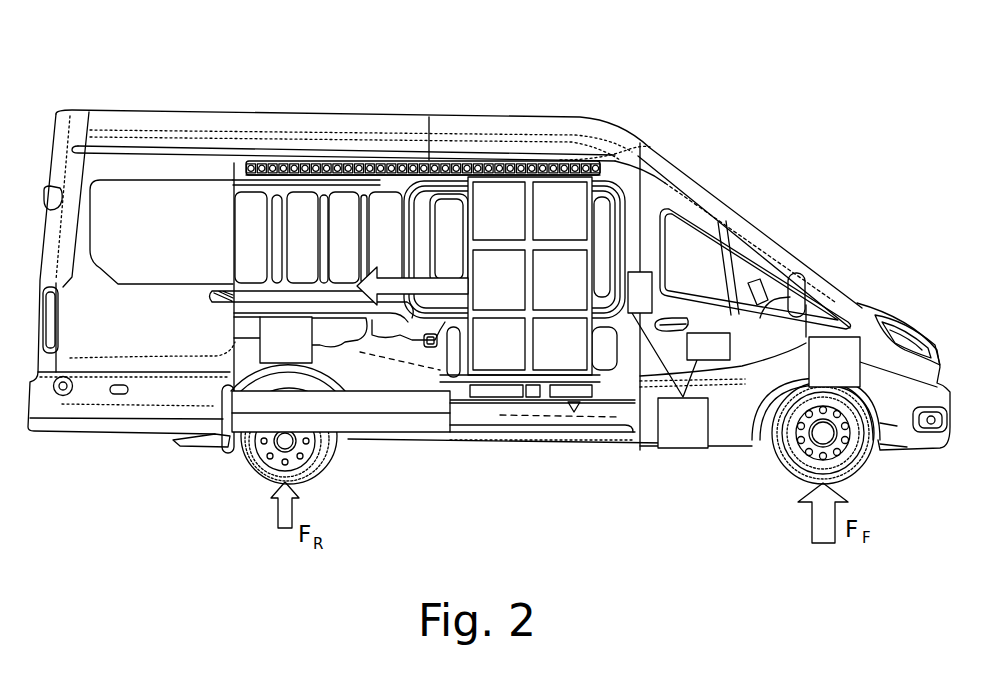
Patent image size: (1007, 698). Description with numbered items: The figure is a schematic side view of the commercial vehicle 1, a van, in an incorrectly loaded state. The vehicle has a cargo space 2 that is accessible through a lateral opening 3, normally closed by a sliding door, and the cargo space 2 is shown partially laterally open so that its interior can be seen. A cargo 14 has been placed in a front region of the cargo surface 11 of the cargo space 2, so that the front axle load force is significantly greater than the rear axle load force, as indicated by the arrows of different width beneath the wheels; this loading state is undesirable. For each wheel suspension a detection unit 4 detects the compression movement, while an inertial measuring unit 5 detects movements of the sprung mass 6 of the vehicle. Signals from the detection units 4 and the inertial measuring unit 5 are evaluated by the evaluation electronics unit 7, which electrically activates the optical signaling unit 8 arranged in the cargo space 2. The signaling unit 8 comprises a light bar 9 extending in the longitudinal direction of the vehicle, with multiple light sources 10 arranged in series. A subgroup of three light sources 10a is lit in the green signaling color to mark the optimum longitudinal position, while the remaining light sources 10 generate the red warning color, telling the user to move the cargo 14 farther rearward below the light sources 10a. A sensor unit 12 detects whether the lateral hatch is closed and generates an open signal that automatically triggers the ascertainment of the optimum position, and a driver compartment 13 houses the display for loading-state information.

The commercial vehicle 1 is at (528, 100).
The cargo space 2 is at (353, 278).
The lateral opening 3 is at (548, 420).
The detection unit 4 is at (836, 335).
The inertial measuring unit 5 is at (730, 300).
The sprung mass 6 is at (212, 100).
The evaluation electronics unit 7 is at (683, 425).
The optical signaling unit 8 is at (274, 148).
The light bar 9 is at (398, 165).
The light sources 10 is at (442, 165).
The light sources of optimum-position subgroup 10a is at (385, 170).
The cargo surface 11 is at (500, 403).
The sensor unit 12 is at (680, 275).
The driver compartment 13 is at (718, 333).
The cargo 14 is at (569, 157).